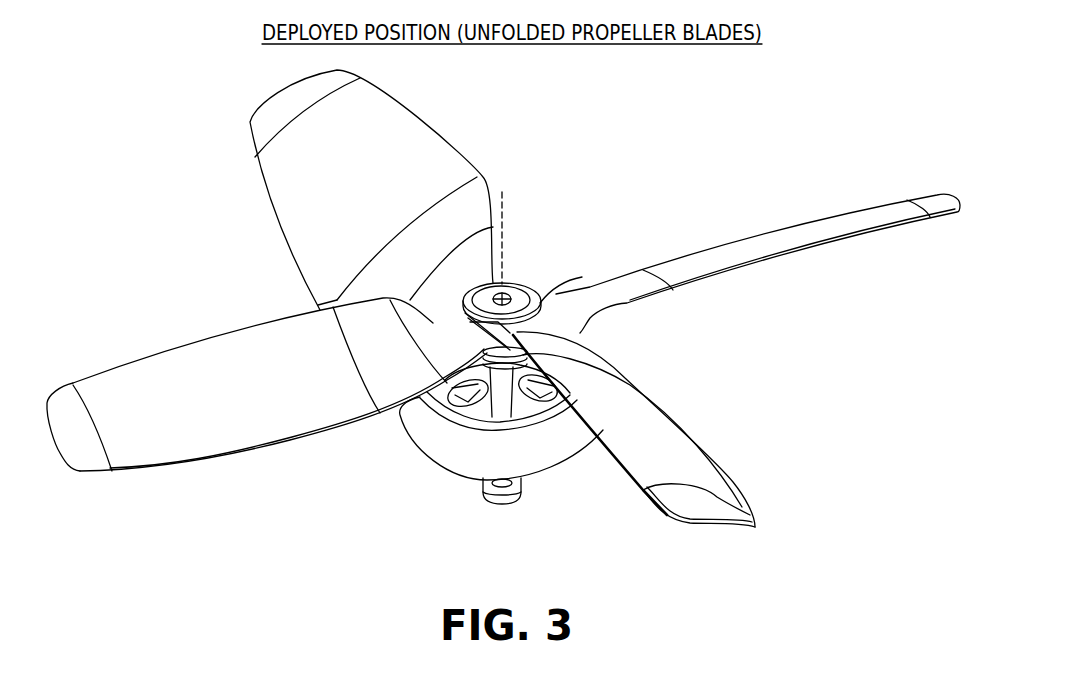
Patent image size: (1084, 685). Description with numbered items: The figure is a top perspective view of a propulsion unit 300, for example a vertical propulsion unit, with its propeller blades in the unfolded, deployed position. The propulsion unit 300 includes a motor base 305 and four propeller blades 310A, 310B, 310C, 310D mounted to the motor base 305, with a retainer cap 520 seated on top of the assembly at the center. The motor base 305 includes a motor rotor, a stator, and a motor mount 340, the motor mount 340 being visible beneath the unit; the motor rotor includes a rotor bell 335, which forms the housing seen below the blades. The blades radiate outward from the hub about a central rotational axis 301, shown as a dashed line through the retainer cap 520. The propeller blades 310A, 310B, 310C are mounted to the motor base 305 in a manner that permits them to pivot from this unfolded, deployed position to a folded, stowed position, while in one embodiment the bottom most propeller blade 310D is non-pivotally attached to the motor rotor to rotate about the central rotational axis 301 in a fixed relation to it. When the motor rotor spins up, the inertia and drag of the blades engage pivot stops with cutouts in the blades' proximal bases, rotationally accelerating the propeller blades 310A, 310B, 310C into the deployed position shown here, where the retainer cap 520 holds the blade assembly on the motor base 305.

The propulsion unit 300 is at (692, 143).
The central rotational axis 301 is at (503, 212).
The motor base 305 is at (468, 450).
The propeller blade 310A is at (656, 436).
The propeller blade 310B is at (242, 406).
The propeller blade 310C is at (379, 189).
The propeller blade 310D is at (806, 255).
The rotor bell 335 is at (510, 413).
The motor mount 340 is at (493, 516).
The retainer cap 520 is at (520, 297).